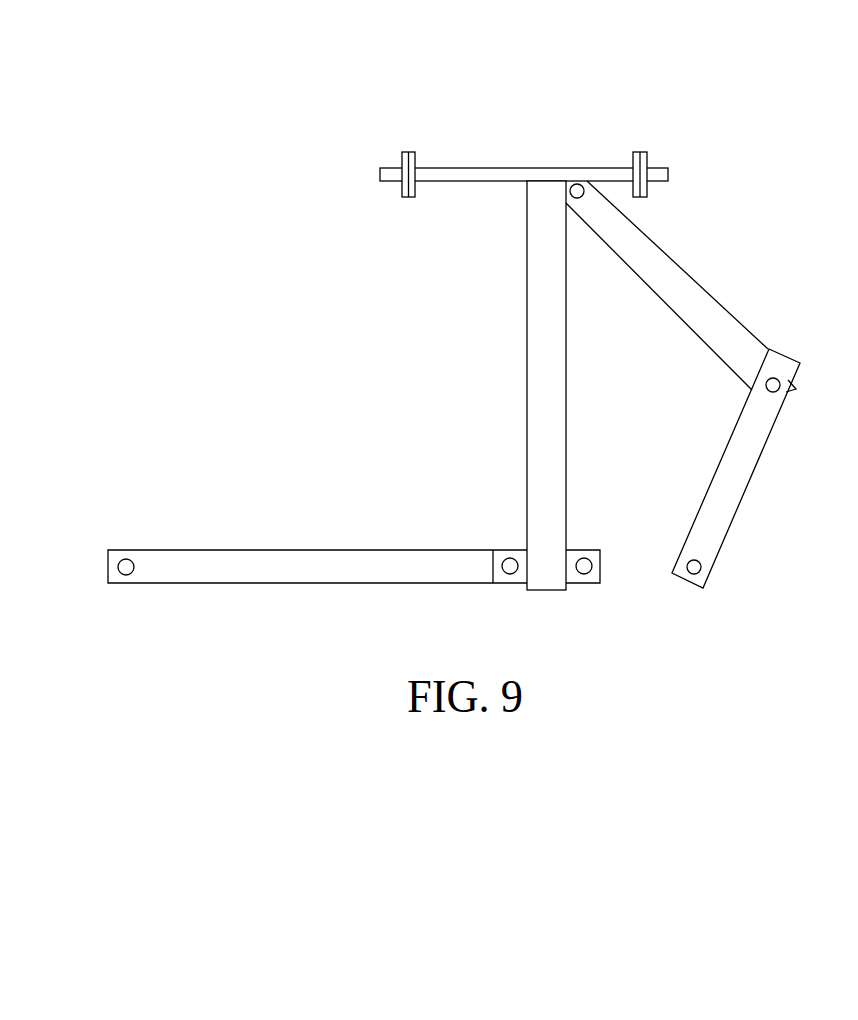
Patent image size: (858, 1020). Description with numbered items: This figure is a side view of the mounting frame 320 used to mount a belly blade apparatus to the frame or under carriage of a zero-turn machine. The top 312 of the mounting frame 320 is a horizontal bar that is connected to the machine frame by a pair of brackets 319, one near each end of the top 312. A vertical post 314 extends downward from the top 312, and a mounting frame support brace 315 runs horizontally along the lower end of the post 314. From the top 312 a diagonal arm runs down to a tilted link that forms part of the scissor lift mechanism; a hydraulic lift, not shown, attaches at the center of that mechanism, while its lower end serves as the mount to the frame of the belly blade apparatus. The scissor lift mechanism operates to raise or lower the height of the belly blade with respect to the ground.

The top of the mounting frame 312 is at (510, 156).
The bracket 319 is at (393, 143).
The vertical post 314 is at (511, 382).
The mounting frame support brace 315 is at (222, 594).
The mounting frame 320 is at (350, 274).